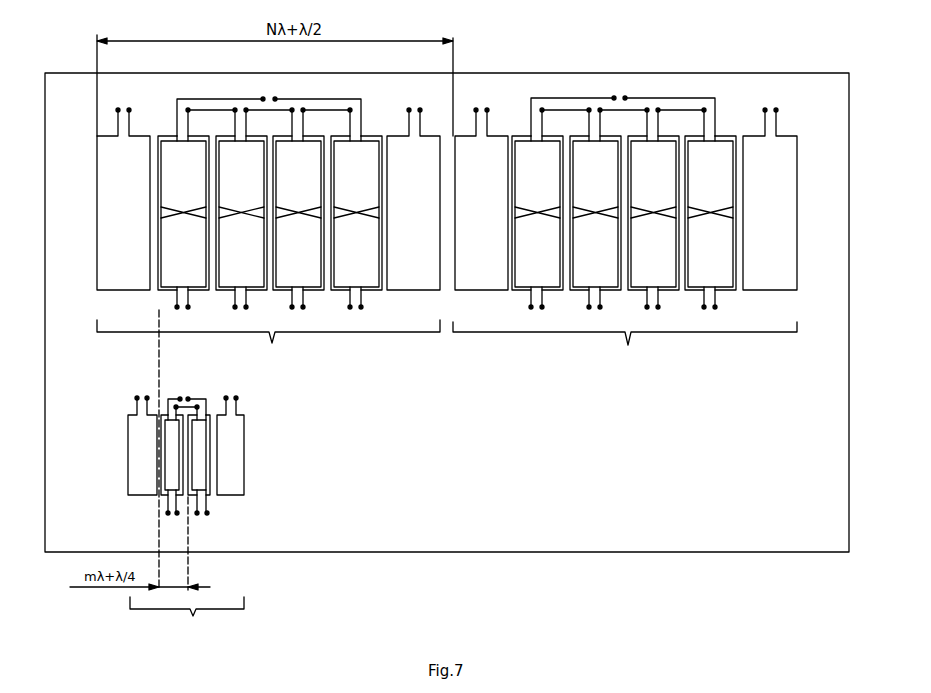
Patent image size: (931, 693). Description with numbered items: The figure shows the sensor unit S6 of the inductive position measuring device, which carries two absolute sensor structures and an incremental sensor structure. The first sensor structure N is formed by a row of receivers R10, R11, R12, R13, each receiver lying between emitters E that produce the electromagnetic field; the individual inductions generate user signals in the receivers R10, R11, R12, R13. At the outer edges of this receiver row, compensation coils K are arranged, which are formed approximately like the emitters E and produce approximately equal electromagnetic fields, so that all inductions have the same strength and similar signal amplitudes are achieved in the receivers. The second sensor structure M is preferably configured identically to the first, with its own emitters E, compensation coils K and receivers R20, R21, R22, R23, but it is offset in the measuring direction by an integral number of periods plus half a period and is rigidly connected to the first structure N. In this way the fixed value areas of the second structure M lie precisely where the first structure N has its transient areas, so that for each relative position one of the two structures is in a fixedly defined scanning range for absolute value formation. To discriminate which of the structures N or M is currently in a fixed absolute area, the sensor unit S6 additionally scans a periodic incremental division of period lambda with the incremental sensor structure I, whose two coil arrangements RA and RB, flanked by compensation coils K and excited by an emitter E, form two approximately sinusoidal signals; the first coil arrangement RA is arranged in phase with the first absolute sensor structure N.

The sensor unit S6 is at (817, 100).
The receiver R10 is at (183, 218).
The receiver R11 is at (241, 218).
The receiver R12 is at (298, 218).
The receiver R13 is at (356, 218).
The receiver R20 is at (537, 218).
The receiver R21 is at (595, 218).
The receiver R22 is at (653, 218).
The receiver R23 is at (710, 218).
The coil arrangement RA is at (172, 472).
The coil arrangement RB is at (199, 472).
The first sensor structure N is at (268, 349).
The second sensor structure M is at (625, 347).
The compensation coil K is at (447, 293).
The emitter E is at (441, 246).
The incremental sensor structure I is at (187, 617).